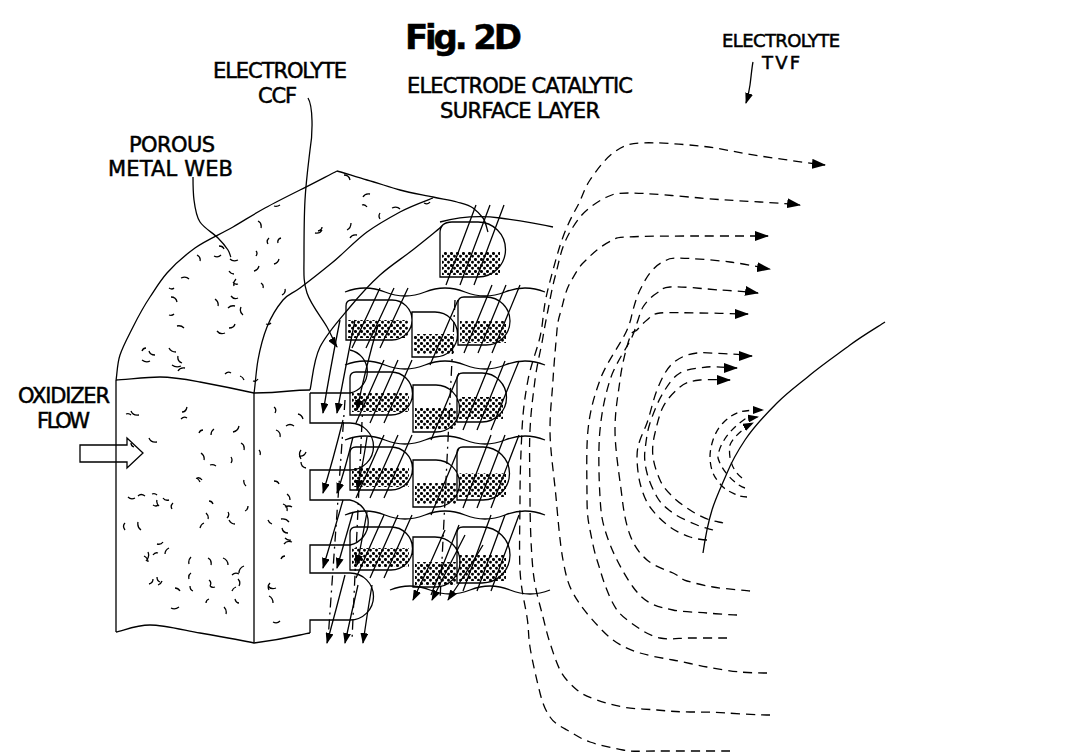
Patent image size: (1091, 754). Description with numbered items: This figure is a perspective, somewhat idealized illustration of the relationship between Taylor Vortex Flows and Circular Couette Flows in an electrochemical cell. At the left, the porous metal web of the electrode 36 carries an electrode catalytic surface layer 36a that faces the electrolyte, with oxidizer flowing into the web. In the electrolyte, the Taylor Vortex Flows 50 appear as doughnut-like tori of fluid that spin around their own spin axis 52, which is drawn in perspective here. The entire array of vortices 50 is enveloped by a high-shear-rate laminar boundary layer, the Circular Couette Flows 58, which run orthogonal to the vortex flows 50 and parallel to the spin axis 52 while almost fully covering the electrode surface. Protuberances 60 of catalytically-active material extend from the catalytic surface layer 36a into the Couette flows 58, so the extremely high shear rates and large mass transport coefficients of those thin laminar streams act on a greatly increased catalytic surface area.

The electrode 36 is at (183, 274).
The electrode surface layer 36a is at (455, 213).
The Taylor Vortex Flows 50 is at (727, 152).
The TVF spin axis 52 is at (826, 359).
The Circular Couette Flows 58 is at (430, 276).
The protuberances 60 is at (504, 558).